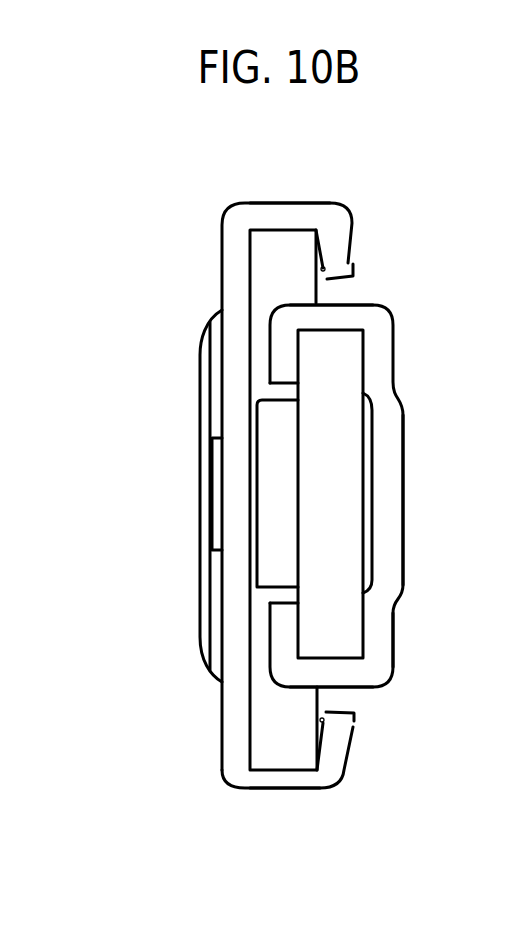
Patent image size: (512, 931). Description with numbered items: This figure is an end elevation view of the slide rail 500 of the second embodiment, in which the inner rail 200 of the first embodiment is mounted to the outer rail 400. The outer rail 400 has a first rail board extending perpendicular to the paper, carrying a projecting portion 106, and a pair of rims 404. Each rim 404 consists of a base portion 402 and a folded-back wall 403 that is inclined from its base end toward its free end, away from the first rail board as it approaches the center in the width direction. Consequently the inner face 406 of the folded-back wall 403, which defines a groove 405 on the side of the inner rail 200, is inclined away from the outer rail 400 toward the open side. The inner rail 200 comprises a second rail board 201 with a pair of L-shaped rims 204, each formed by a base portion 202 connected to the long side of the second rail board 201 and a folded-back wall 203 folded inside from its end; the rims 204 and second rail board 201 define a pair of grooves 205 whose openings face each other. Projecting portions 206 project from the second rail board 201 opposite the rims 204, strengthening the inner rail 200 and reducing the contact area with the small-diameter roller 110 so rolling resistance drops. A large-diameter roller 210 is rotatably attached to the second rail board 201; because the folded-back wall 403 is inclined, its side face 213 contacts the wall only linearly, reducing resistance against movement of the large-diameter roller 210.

The projecting portion 106 is at (213, 570).
The small-diameter roller 110 is at (353, 460).
The inner rail 200 is at (281, 485).
The second rail board 201 is at (392, 645).
The base portion 202 is at (327, 310).
The folded-back wall 203 is at (280, 368).
The rim 204 is at (142, 318).
The groove 205 is at (322, 338).
The projecting portion 206 is at (395, 520).
The large-diameter roller 210 is at (266, 284).
The side face 213 is at (317, 292).
The outer rail 400 is at (285, 499).
The base portion 402 is at (293, 207).
The folded-back wall 403 is at (334, 243).
The rim 404 is at (378, 162).
The groove 405 is at (277, 238).
The inner face 406 is at (325, 268).
The slide rail 500 is at (385, 200).